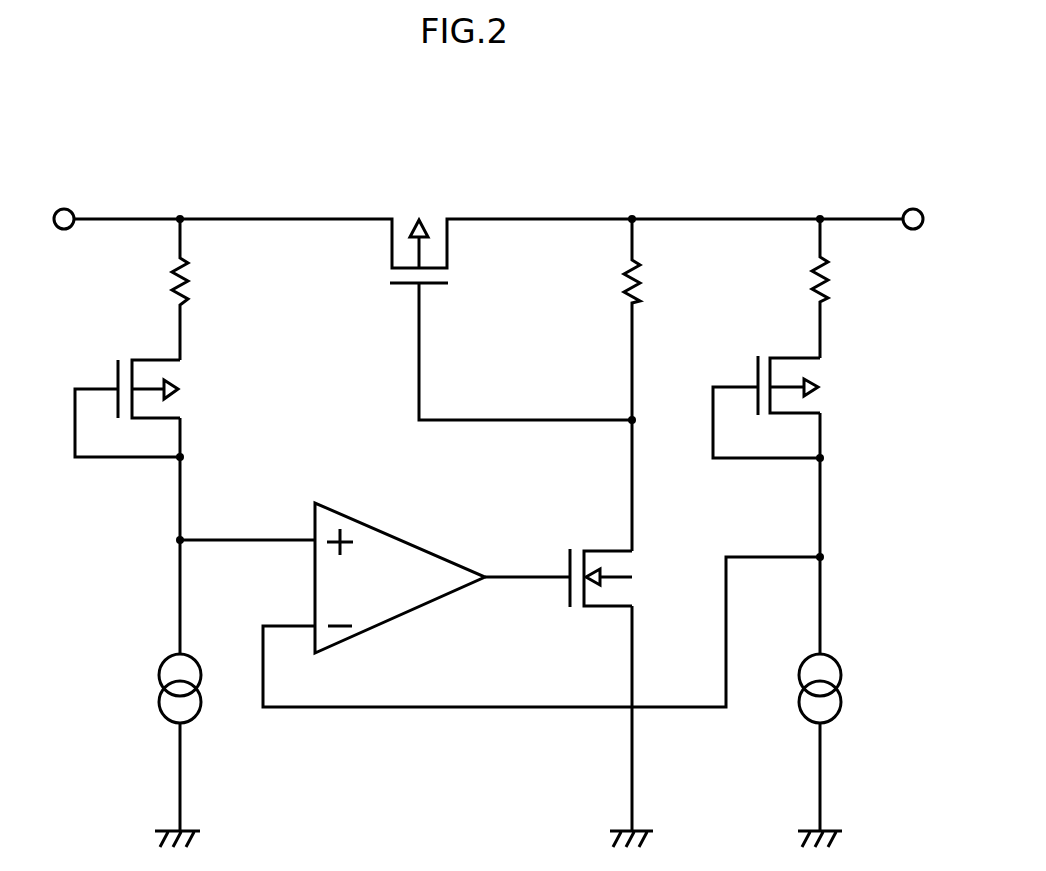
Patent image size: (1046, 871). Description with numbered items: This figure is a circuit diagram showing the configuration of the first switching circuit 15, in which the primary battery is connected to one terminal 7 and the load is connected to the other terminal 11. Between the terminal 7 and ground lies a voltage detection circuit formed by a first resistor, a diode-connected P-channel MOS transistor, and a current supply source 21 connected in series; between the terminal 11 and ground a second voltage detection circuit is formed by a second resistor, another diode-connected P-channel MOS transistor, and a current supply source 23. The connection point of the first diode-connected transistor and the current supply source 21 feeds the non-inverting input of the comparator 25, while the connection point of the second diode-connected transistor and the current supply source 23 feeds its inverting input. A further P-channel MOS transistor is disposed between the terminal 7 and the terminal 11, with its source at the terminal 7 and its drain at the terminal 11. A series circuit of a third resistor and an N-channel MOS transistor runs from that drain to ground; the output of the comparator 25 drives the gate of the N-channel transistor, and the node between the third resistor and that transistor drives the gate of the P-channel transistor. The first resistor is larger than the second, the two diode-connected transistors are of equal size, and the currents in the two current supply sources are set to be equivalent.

The terminal 7 is at (64, 209).
The terminal 11 is at (913, 209).
The first switching circuit 15 is at (588, 145).
The current supply source 21 is at (161, 665).
The current supply source 23 is at (839, 666).
The comparator 25 is at (402, 538).